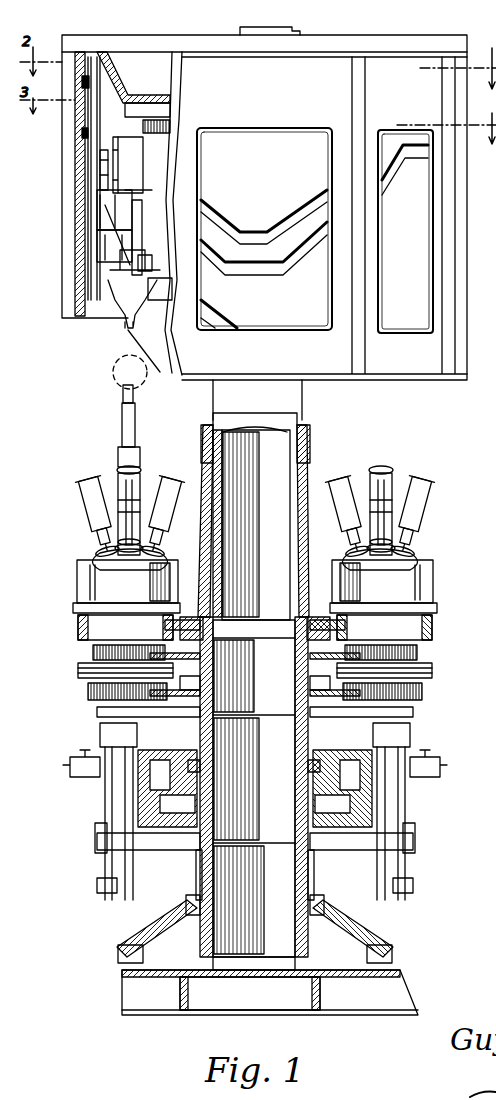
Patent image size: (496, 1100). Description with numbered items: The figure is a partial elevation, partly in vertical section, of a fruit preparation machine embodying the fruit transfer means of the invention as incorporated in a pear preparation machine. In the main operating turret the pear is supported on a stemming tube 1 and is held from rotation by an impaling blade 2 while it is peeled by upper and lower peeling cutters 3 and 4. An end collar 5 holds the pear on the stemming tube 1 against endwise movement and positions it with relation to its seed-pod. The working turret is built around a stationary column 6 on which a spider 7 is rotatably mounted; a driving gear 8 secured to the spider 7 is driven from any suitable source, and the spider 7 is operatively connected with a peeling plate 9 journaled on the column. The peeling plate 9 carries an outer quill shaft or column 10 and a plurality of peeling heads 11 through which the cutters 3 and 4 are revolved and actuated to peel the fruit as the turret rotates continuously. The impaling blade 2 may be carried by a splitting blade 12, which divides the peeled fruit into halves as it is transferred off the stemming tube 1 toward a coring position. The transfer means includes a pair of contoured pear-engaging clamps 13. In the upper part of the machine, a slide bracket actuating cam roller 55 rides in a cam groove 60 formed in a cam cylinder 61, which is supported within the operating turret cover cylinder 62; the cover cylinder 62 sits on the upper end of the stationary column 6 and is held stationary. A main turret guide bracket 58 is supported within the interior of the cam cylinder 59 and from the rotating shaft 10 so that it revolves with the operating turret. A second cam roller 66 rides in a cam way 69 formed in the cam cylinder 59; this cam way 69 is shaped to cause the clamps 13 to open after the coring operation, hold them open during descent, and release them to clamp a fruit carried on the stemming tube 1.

The stemming tube 1 is at (123, 392).
The impaling blade 2 is at (125, 323).
The upper peeling cutter 3 is at (120, 470).
The lower peeling cutter 4 is at (82, 497).
The end collar 5 is at (122, 412).
The stationary column 6 is at (315, 880).
The spider 7 is at (194, 872).
The driving gear 8 is at (120, 955).
The peeling plate 9 is at (80, 633).
The outer quill shaft 10 is at (302, 406).
The peeling heads 11 is at (72, 581).
The splitting blade 12 is at (148, 302).
The pear-engaging clamps 13 is at (151, 247).
The cam roller 55 is at (82, 132).
The main turret guide bracket 58 is at (150, 176).
The cam cylinder 59 is at (70, 195).
The cam groove 60 is at (82, 160).
The cam cylinder 61 is at (78, 213).
The operating turret cover cylinder 62 is at (75, 232).
The cam roller 66 is at (90, 78).
The cam way 69 is at (87, 85).